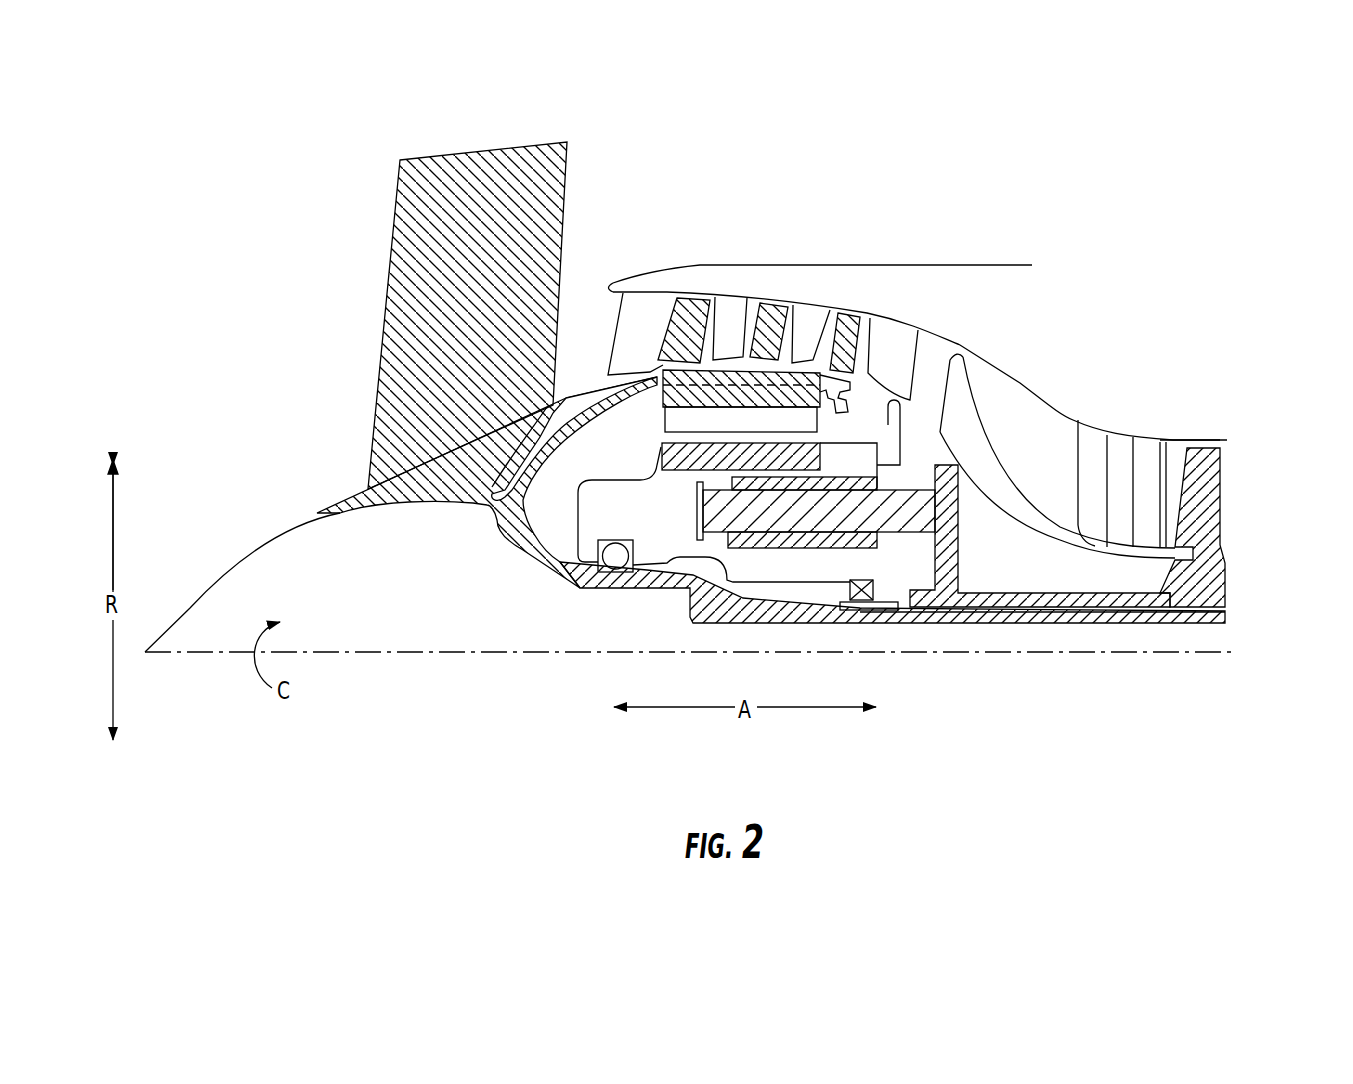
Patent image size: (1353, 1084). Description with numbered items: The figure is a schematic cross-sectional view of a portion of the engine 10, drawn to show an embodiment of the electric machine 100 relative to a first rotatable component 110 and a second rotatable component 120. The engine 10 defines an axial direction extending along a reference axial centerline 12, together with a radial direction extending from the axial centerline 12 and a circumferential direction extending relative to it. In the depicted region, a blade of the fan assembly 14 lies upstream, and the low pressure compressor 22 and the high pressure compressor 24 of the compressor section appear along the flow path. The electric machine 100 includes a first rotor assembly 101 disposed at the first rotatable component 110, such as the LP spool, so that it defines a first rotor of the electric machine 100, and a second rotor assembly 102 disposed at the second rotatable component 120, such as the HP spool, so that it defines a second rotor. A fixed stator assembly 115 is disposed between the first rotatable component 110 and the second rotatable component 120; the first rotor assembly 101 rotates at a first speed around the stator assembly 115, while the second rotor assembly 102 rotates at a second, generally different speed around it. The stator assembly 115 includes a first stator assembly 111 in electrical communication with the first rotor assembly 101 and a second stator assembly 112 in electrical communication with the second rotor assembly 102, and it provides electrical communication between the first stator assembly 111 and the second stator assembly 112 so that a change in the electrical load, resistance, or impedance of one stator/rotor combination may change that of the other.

The engine 10 is at (1074, 176).
The axial centerline 12 is at (207, 652).
The fan assembly 14 is at (385, 410).
The low pressure compressor 22 is at (788, 287).
The high pressure compressor 24 is at (1231, 516).
The electric machine 100 is at (704, 574).
The first rotor assembly 101 is at (692, 412).
The second rotor assembly 102 is at (958, 500).
The first rotatable component 110 is at (693, 303).
The first stator assembly 111 is at (684, 452).
The second stator assembly 112 is at (856, 489).
The stator assembly 115 is at (914, 462).
The second rotatable component 120 is at (1205, 463).